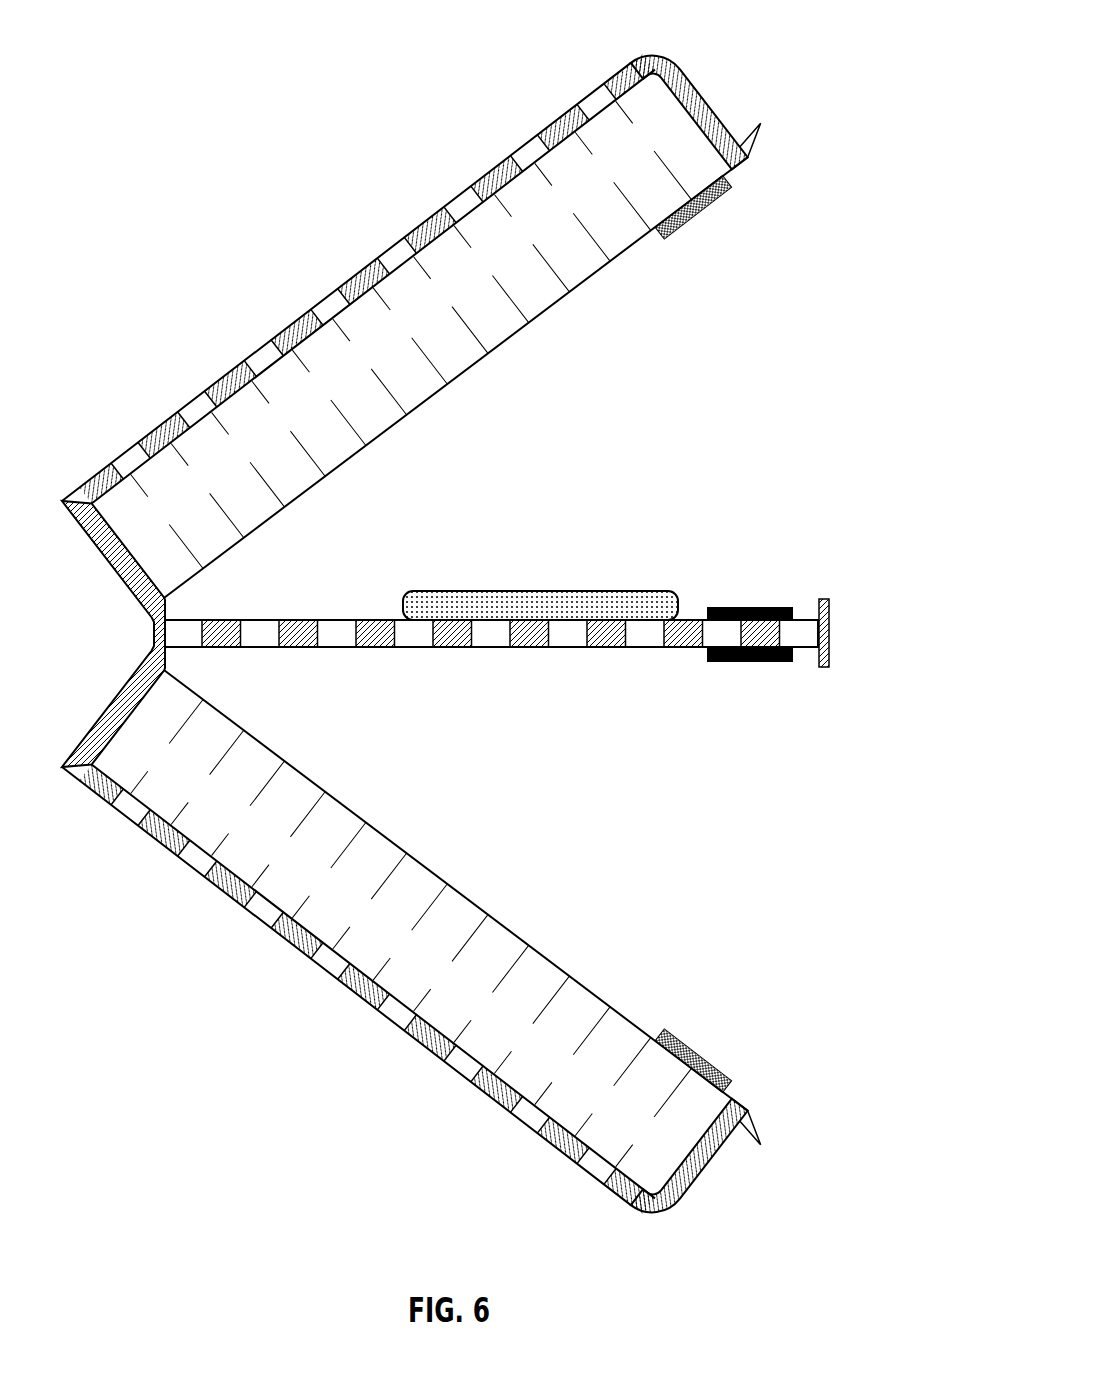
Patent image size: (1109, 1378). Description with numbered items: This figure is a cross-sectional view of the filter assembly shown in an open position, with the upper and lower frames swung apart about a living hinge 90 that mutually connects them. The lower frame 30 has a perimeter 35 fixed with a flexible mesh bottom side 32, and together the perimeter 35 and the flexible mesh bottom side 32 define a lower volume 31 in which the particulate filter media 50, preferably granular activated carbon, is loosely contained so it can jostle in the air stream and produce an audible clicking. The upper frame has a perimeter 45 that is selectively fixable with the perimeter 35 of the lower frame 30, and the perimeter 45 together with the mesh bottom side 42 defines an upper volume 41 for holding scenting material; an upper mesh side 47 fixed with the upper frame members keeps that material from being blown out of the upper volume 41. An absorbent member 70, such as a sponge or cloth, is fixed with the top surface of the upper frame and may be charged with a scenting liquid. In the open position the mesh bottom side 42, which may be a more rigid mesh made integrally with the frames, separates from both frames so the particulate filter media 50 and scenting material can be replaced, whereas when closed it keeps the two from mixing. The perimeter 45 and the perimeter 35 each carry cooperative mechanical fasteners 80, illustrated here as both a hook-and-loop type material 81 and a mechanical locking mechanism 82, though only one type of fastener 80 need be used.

The lower frame 30 is at (414, 970).
The lower volume 31 is at (415, 890).
The flexible mesh bottom side 32 is at (483, 1110).
The perimeter 35 is at (702, 93).
The upper volume 41 is at (413, 377).
The mesh bottom side 42 is at (510, 648).
The perimeter 45 is at (702, 1172).
The upper mesh side 47 is at (480, 182).
The particulate filter media 50 is at (415, 301).
The absorbent member 70 is at (541, 590).
The mechanical fastener 80 is at (836, 633).
The hook-and-loop type material 81 is at (698, 207).
The mechanical locking mechanism 82 is at (766, 131).
The living hinge 90 is at (152, 632).